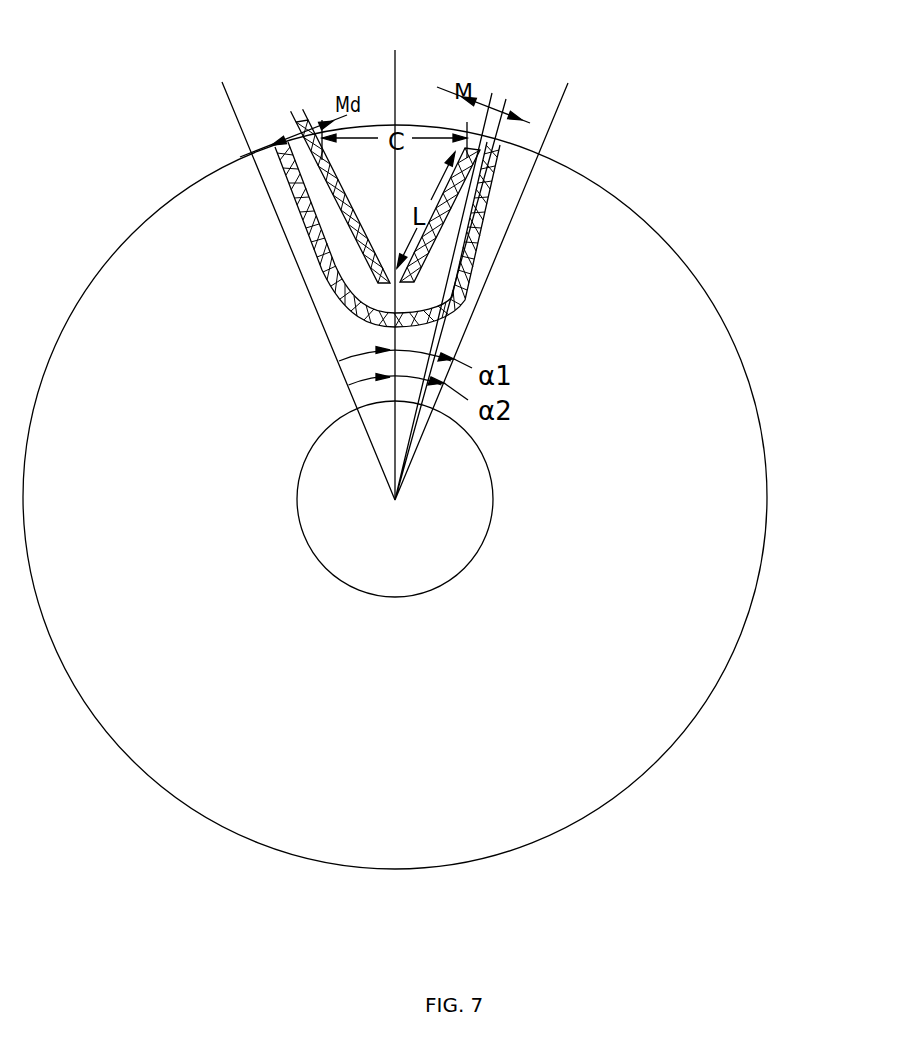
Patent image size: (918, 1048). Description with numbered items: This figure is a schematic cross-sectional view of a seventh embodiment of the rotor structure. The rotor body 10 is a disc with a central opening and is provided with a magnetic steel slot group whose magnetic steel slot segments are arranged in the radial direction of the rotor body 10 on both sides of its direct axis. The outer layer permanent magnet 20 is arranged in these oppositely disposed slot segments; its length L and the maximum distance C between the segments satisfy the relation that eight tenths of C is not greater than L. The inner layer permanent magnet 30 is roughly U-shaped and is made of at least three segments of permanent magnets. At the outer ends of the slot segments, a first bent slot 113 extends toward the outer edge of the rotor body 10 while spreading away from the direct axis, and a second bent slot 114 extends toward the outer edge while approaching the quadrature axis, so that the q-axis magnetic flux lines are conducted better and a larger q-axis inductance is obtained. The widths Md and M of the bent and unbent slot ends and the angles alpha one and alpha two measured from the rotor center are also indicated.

The rotor body 10 is at (690, 520).
The outer layer permanent magnet 20 is at (508, 212).
The inner layer permanent magnet 30 is at (488, 205).
The first bent slot 113 is at (322, 153).
The second bent slot 114 is at (455, 185).